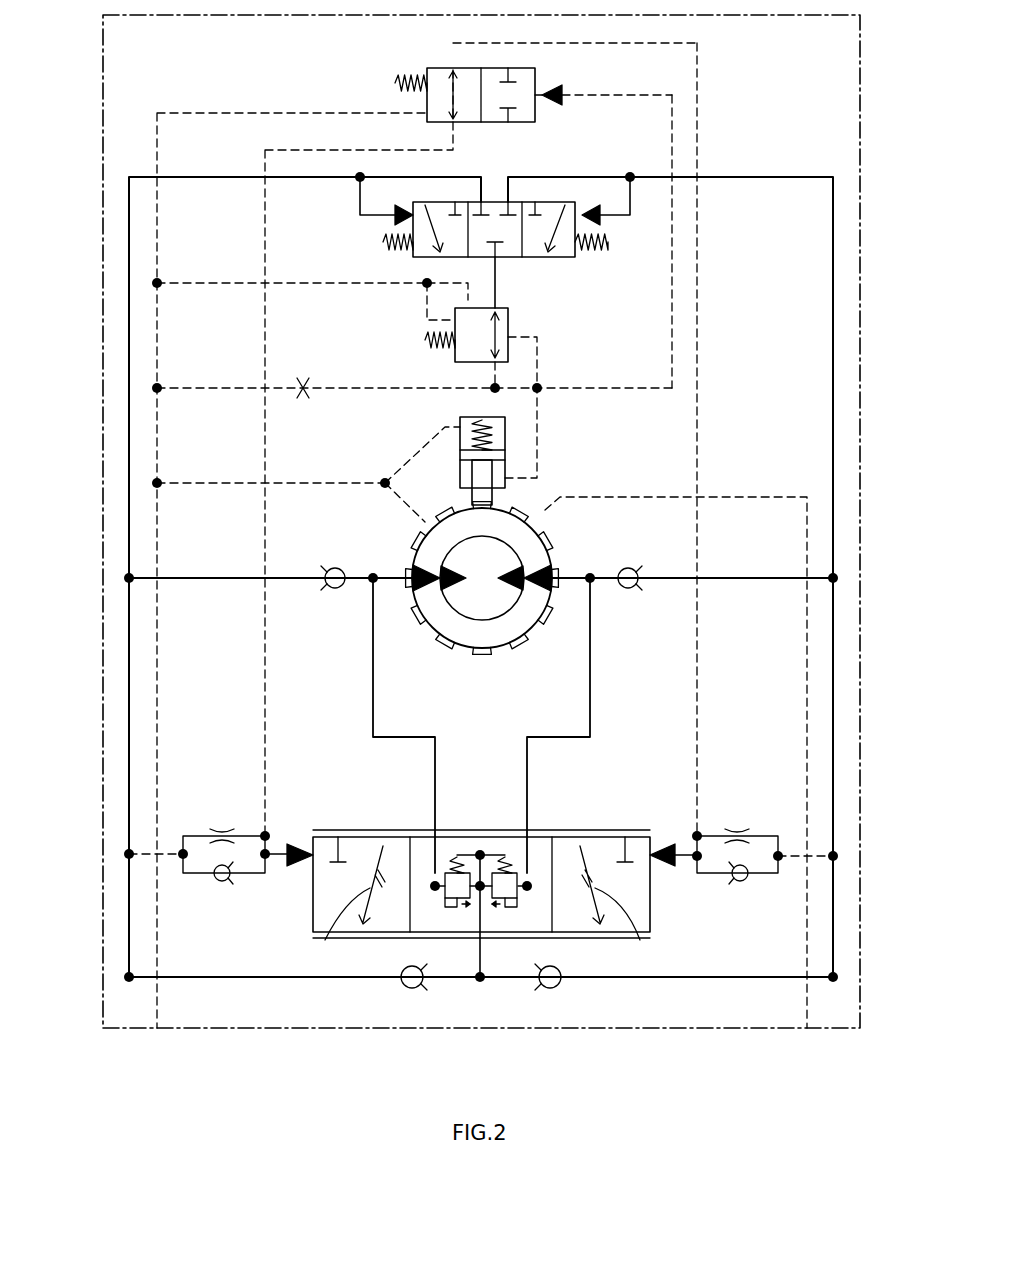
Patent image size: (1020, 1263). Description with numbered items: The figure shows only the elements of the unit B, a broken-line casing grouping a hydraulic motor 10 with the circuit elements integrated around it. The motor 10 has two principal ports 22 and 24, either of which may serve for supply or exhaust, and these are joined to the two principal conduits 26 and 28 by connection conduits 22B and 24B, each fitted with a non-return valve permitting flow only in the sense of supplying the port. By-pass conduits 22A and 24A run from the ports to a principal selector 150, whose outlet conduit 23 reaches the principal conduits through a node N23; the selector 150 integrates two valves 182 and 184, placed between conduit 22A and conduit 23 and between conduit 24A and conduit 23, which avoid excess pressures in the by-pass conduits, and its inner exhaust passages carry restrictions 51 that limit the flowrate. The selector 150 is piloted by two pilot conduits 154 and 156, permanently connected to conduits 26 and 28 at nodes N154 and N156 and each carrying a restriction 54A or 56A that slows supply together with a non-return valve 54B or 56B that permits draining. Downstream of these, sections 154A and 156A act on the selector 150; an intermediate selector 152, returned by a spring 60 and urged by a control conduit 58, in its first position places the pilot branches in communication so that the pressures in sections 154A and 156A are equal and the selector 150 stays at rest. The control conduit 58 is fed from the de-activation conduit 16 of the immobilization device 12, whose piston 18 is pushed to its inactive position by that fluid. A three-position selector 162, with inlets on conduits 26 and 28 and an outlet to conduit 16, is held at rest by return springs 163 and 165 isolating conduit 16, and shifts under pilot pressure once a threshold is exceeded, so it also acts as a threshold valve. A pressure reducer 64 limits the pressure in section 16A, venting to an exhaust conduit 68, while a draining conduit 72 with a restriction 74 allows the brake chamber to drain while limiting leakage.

The unit B is at (862, 115).
The motor 10 is at (548, 535).
The immobilization device 12 is at (448, 450).
The de-activation conduit 16 is at (497, 282).
The section of the de-activation conduit 16A is at (537, 435).
The piston 18 is at (486, 488).
The principal port 22 is at (565, 585).
The by-pass conduit 22A is at (590, 690).
The connection conduit 22B is at (753, 578).
The conduit 23 is at (482, 962).
The principal port 24 is at (402, 585).
The by-pass conduit 24A is at (373, 690).
The connection conduit 24B is at (210, 578).
The principal conduit 26 is at (745, 177).
The principal conduit 28 is at (232, 177).
The restriction 51 is at (640, 940).
The restriction 54A is at (737, 830).
The non-return valve 54B is at (735, 880).
The restriction 56A is at (222, 830).
The non-return valve 56B is at (232, 880).
The control conduit 58 is at (672, 320).
The spring 60 is at (392, 85).
The pressure reducer 64 is at (512, 318).
The exhaust conduit 68 is at (165, 340).
The draining conduit 72 is at (383, 390).
The restriction 74 is at (303, 372).
The principal selector 150 is at (590, 822).
The intermediate selector 152 is at (545, 80).
The pilot conduit 154 is at (790, 860).
The section of pilot conduit 154A is at (680, 850).
The pilot conduit 156 is at (183, 860).
The section of pilot conduit 156A is at (288, 850).
The three-position selector 162 is at (535, 185).
The return spring 163 is at (590, 250).
The return spring 165 is at (380, 245).
The valve 182 is at (505, 855).
The valve 184 is at (457, 855).
The node N23 is at (480, 977).
The node N154 is at (833, 856).
The node N156 is at (129, 854).